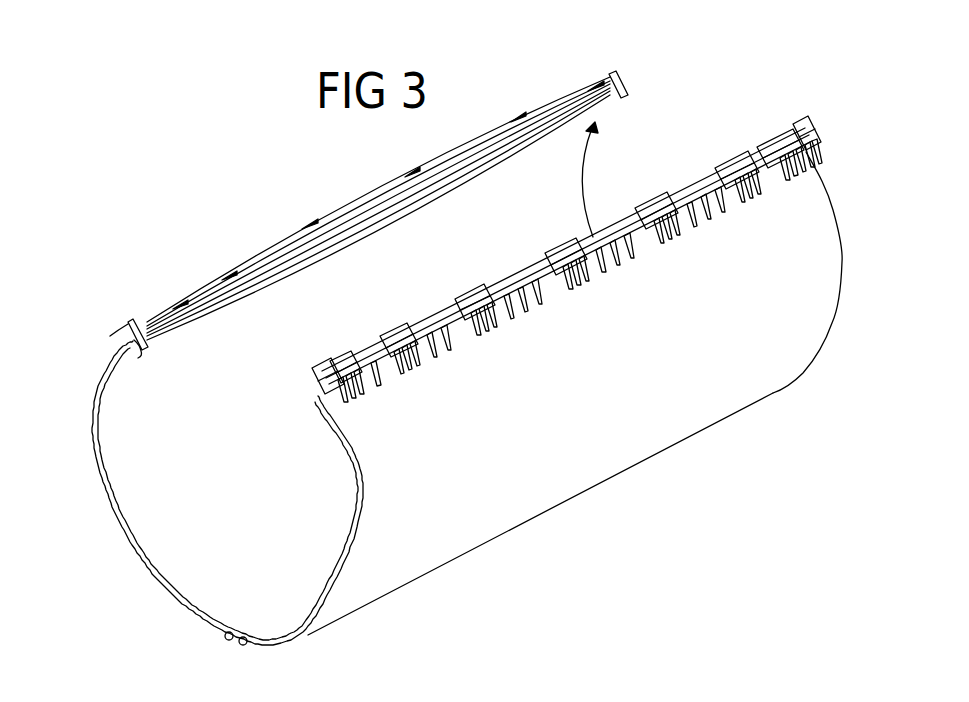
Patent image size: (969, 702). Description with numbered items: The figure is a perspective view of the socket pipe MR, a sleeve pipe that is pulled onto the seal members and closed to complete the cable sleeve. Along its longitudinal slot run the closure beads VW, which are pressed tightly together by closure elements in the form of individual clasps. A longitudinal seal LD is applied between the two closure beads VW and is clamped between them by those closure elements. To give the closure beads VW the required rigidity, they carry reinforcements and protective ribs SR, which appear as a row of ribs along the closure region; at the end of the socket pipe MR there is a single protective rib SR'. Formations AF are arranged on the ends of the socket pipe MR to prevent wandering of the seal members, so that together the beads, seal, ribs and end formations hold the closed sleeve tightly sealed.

The socket pipe MR is at (570, 463).
The longitudinal seal LD is at (113, 333).
The protective ribs SR is at (572, 259).
The single protective rib SR' is at (289, 401).
The formations AF is at (130, 362).
The closure beads VW is at (757, 140).